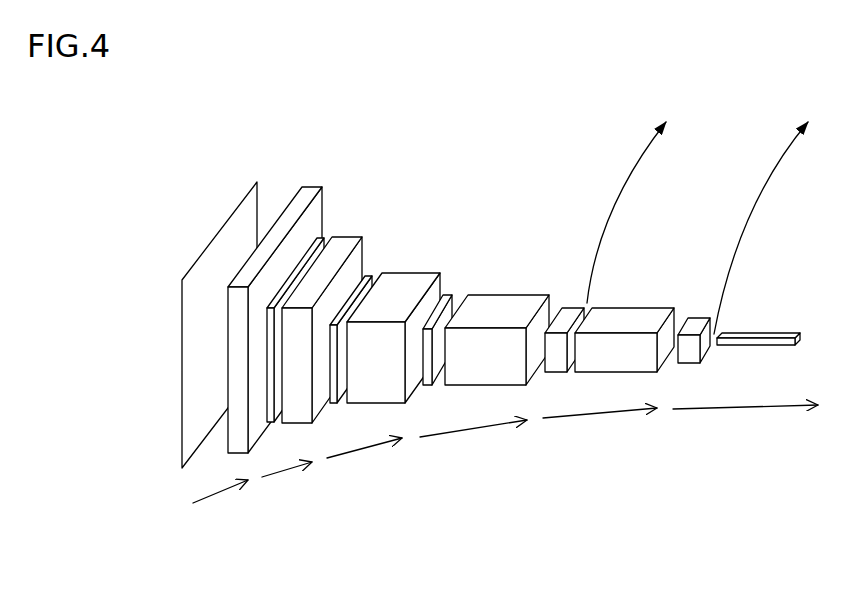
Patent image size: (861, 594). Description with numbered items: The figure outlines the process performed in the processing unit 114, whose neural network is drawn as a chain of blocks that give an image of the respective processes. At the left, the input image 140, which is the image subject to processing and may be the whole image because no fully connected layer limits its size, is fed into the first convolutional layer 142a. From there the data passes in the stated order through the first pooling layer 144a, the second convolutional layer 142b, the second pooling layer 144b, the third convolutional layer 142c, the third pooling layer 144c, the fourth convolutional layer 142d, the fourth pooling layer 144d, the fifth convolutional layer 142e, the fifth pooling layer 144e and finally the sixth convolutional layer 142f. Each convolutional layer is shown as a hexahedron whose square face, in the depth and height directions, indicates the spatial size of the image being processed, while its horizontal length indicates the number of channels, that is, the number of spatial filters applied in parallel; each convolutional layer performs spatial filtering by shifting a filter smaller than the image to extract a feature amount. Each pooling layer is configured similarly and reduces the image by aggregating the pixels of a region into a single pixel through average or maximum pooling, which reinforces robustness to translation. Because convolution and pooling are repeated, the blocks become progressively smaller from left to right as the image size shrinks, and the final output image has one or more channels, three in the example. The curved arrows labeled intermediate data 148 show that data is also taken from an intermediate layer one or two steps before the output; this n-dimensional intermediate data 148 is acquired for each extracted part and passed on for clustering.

The processing unit 114 is at (531, 580).
The input image 140 is at (218, 232).
The first convolutional layer 142a is at (307, 188).
The second convolutional layer 142b is at (343, 240).
The third convolutional layer 142c is at (410, 275).
The fourth convolutional layer 142d is at (490, 305).
The fifth convolutional layer 142e is at (613, 320).
The sixth convolutional layer 142f is at (772, 333).
The first pooling layer 144a is at (320, 238).
The second pooling layer 144b is at (370, 273).
The third pooling layer 144c is at (447, 290).
The fourth pooling layer 144d is at (570, 303).
The fifth pooling layer 144e is at (693, 320).
The intermediate data 148 is at (709, 214).